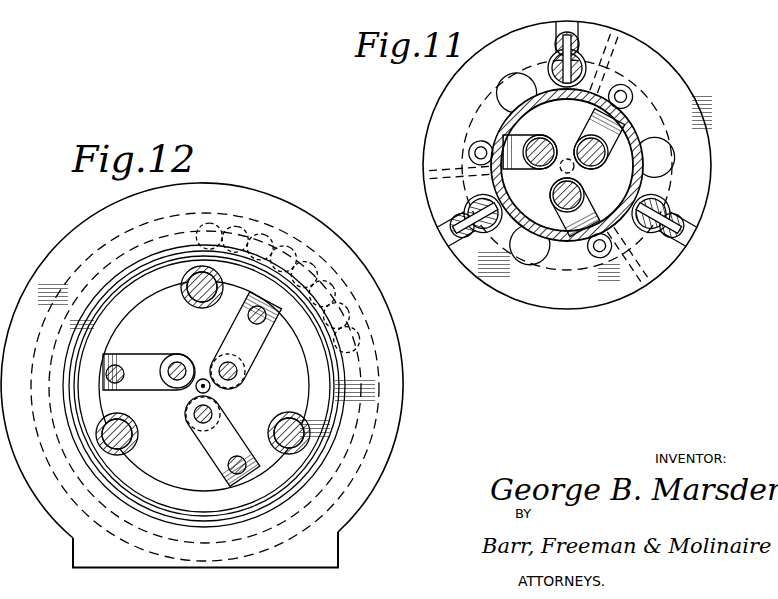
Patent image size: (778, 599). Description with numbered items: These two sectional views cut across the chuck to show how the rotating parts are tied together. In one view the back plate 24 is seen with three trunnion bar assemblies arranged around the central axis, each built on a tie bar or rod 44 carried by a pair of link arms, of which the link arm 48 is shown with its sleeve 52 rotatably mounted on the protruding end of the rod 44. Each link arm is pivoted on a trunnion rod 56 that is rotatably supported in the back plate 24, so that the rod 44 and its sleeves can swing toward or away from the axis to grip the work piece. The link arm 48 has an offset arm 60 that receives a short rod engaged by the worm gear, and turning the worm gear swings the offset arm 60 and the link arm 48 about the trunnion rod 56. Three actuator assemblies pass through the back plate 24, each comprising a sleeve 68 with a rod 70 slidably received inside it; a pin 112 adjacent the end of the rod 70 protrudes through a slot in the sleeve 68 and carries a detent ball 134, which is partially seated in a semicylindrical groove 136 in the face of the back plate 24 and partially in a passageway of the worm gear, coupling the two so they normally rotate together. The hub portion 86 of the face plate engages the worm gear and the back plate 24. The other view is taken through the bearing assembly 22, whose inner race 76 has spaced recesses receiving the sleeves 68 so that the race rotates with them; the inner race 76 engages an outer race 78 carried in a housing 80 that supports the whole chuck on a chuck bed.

In FIG. 12, the bearing assembly 22 is at (254, 193).
In FIG. 11, the back plate 24 is at (711, 172).
In FIG. 12, the tie bar or rod 44 is at (186, 364).
In FIG. 11, the tie bar or rod 44 is at (584, 142).
In FIG. 12, the link arm 48 is at (146, 389).
In FIG. 11, the link arm 48 is at (588, 211).
In FIG. 11, the sleeve 52 is at (548, 181).
In FIG. 12, the trunnion rod 56 is at (121, 368).
In FIG. 11, the trunnion rod 56 is at (630, 96).
In FIG. 12, the offset portion or arm 60 is at (228, 480).
In FIG. 12, the sleeve 68 is at (206, 308).
In FIG. 11, the sleeve 68 is at (548, 72).
In FIG. 12, the rod 70 is at (188, 298).
In FIG. 11, the rod 70 is at (580, 70).
In FIG. 12, the inner race 76 is at (305, 372).
In FIG. 12, the outer race 78 is at (298, 228).
In FIG. 12, the housing 80 is at (352, 521).
In FIG. 11, the hub portion 86 is at (566, 257).
In FIG. 11, the pin 112 is at (560, 66).
In FIG. 11, the detent ball 134 is at (555, 45).
In FIG. 11, the semicylindrical groove 136 is at (568, 25).